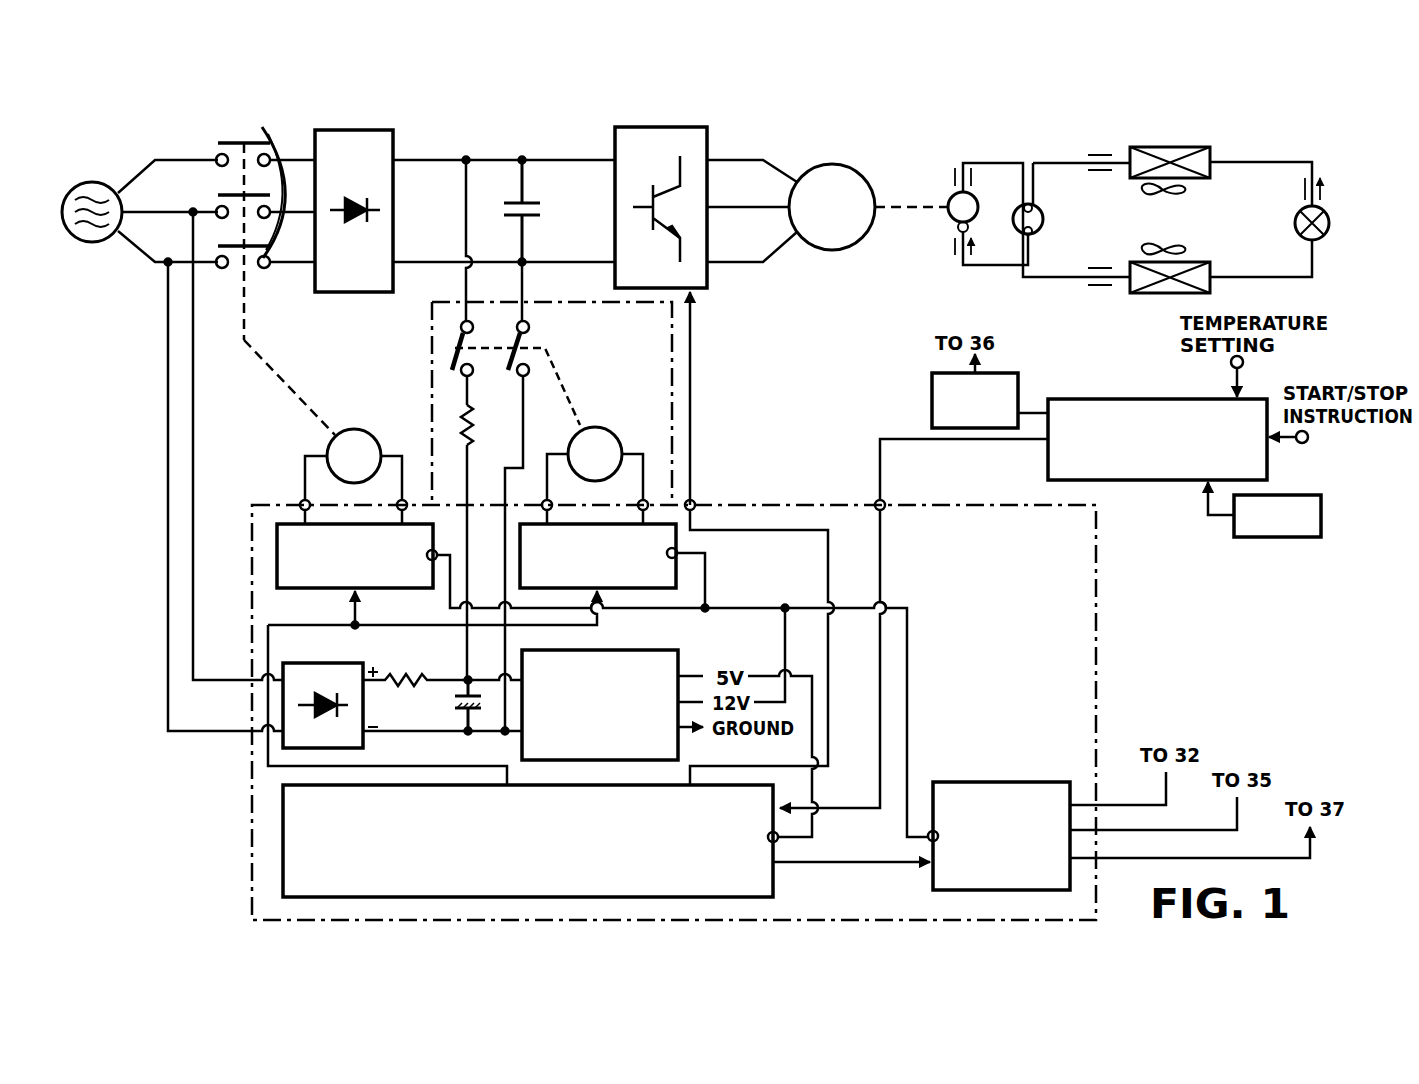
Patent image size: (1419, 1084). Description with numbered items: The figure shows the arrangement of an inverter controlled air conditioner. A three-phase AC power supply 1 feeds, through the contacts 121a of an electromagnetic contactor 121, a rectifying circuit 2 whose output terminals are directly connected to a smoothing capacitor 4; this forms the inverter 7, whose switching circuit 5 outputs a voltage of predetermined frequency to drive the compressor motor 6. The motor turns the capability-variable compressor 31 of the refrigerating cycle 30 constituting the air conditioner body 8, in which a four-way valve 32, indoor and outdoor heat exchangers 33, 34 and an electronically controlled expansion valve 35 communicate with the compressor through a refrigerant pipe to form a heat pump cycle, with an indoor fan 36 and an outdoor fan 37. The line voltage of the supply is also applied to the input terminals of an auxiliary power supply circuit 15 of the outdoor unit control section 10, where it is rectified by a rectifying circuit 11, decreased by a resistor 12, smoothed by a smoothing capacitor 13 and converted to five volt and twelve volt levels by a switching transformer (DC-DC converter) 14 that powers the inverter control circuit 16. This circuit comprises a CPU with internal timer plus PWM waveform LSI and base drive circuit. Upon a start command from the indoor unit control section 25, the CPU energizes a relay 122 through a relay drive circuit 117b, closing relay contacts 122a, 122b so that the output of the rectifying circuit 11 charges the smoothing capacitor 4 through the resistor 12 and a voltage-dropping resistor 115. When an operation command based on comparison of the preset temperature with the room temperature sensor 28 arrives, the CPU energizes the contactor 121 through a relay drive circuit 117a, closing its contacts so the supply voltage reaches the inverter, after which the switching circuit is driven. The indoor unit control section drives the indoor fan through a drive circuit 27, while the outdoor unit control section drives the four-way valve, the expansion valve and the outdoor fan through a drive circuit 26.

The three-phase AC power supply 1 is at (92, 182).
The rectifying circuit 2 is at (375, 130).
The smoothing capacitor 4 is at (542, 210).
The switching circuit 5 is at (690, 127).
The compressor motor 6 is at (838, 165).
The inverter 7 is at (568, 130).
The air conditioner body 8 is at (906, 297).
The outdoor unit control section 10 is at (753, 500).
The rectifying circuit 11 is at (305, 663).
The resistor 12 is at (400, 677).
The smoothing capacitor 13 is at (453, 707).
The switching transformer (DC-DC converter) 14 is at (652, 650).
The auxiliary power supply circuit 15 is at (262, 712).
The inverter control circuit 16 is at (775, 882).
The indoor unit control section 25 is at (1152, 480).
The drive circuit 26 is at (960, 782).
The drive circuit 27 is at (932, 418).
The room temperature sensor 28 is at (1288, 537).
The refrigerating cycle 30 is at (1050, 290).
The capability-variable compressor 31 is at (951, 200).
The four-way valve 32 is at (1044, 219).
The indoor heat exchanger 33 is at (1203, 262).
The outdoor heat exchanger 34 is at (1188, 147).
The electronically controlled expansion valve 35 is at (1329, 218).
The indoor fan 36 is at (1153, 250).
The outdoor fan 37 is at (1172, 192).
The resistor 115 is at (475, 438).
The relay drive circuit 117a is at (385, 590).
The relay drive circuit 117b is at (680, 545).
The electromagnetic contactor 121 is at (365, 430).
The contacts 121a is at (257, 140).
The relay 122 is at (605, 428).
The relay contact 122a is at (452, 338).
The relay contact 122b is at (526, 338).